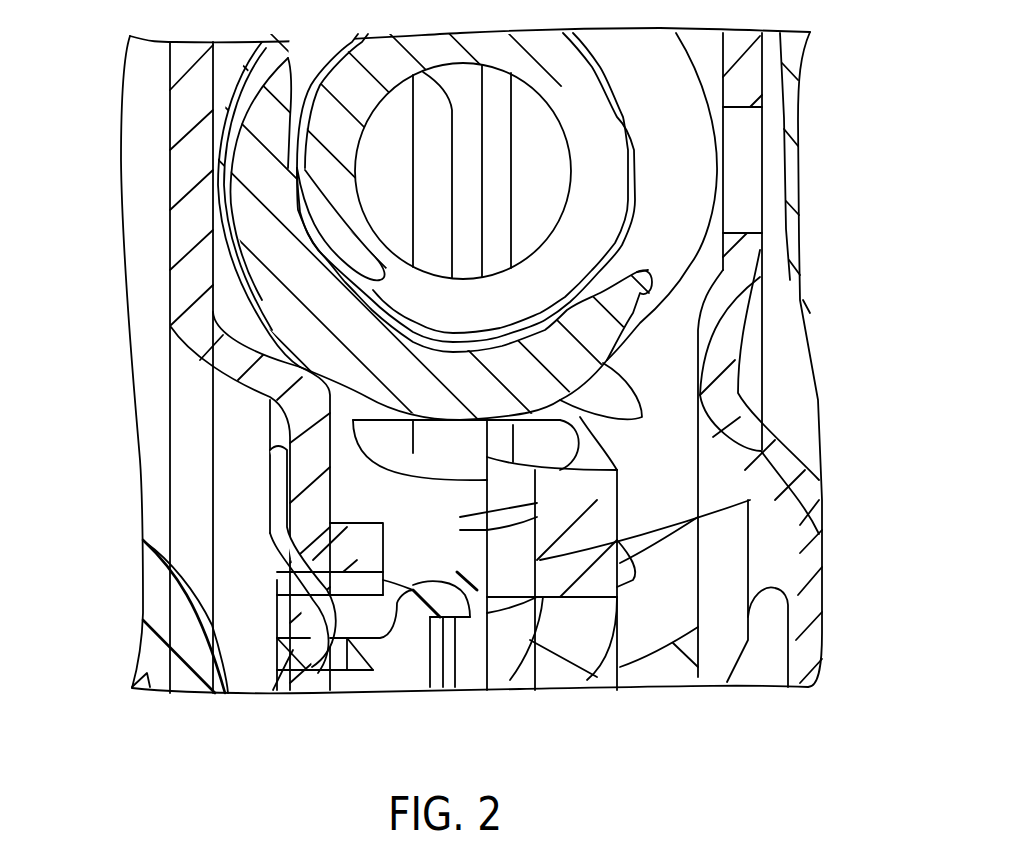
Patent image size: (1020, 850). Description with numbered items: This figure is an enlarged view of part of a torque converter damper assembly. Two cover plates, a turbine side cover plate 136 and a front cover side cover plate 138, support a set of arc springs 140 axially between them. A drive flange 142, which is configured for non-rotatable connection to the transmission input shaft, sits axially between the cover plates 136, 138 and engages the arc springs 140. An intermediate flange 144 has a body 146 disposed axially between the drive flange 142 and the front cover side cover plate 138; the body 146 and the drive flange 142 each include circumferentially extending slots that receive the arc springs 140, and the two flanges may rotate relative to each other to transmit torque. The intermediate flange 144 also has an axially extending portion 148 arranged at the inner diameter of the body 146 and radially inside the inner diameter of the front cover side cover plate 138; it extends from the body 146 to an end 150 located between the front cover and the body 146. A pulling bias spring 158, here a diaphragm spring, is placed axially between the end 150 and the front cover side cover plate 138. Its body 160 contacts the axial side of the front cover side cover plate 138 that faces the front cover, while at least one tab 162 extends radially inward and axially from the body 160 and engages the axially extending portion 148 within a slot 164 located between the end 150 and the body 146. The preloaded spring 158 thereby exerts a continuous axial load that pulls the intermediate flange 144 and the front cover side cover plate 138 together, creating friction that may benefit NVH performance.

The turbine side cover plate 136 is at (800, 555).
The front cover side cover plate 138 is at (172, 260).
The arc springs 140 is at (652, 282).
The drive flange 142 is at (590, 542).
The intermediate flange 144 is at (448, 473).
The body 146 is at (555, 505).
The axially extending portion 148 is at (377, 660).
The end 150 is at (305, 650).
The pulling bias spring 158 is at (257, 477).
The body 160 is at (275, 535).
The tab 162 is at (278, 578).
The slot 164 is at (300, 693).